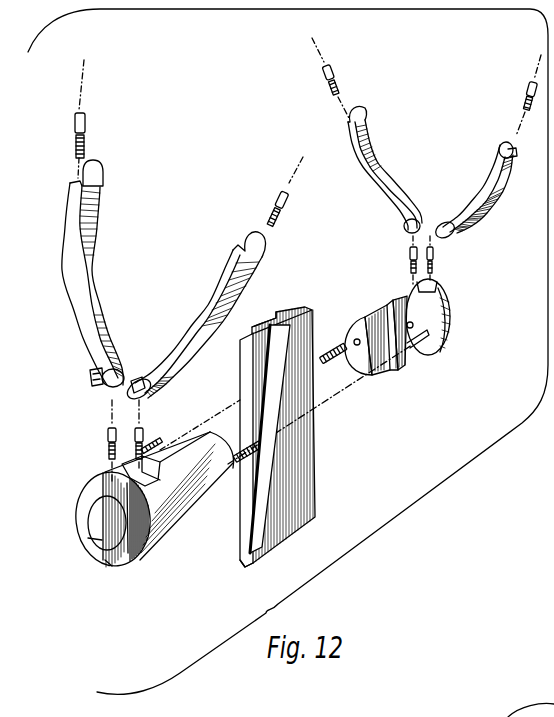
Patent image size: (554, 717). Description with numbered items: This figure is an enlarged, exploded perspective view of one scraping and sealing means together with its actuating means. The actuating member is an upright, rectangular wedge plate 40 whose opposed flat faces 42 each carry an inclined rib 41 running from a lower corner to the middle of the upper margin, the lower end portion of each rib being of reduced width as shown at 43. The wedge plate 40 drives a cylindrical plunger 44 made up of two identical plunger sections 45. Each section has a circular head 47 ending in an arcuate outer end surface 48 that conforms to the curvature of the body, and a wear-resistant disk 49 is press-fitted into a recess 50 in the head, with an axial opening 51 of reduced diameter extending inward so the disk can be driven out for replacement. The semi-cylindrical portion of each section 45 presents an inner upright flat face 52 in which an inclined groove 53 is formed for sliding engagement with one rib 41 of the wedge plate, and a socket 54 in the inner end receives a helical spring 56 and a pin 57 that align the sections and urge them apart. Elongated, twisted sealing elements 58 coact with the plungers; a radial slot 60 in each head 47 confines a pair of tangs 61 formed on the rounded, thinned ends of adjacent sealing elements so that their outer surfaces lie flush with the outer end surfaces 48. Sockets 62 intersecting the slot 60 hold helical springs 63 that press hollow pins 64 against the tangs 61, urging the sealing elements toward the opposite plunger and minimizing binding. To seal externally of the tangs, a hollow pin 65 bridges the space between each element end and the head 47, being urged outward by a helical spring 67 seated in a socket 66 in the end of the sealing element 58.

The wedge plate 40 is at (316, 516).
The inclined rib 41 is at (262, 318).
The flat face 42 is at (300, 463).
The reduced-width lower end portion of rib 43 is at (243, 563).
The cylindrical plunger 44 is at (78, 492).
The plunger section 45 is at (196, 512).
The head 47 is at (448, 342).
The outer end surface 48 is at (108, 557).
The disk 49 is at (105, 520).
The recess 50 is at (102, 540).
The axial opening 51 is at (448, 315).
The flat face 52 is at (396, 298).
The inclined groove 53 is at (196, 448).
The socket 54 is at (352, 340).
The helical spring 56 is at (236, 445).
The pin 57 is at (146, 446).
The sealing element 58 is at (95, 246).
The radial slot 60 is at (428, 294).
The tang 61 is at (250, 233).
The socket 62 is at (152, 476).
The helical spring 63 is at (107, 440).
The hollow pin 64 is at (408, 258).
The hollow pin 65 is at (87, 128).
The socket 66 is at (512, 153).
The helical spring 67 is at (338, 88).